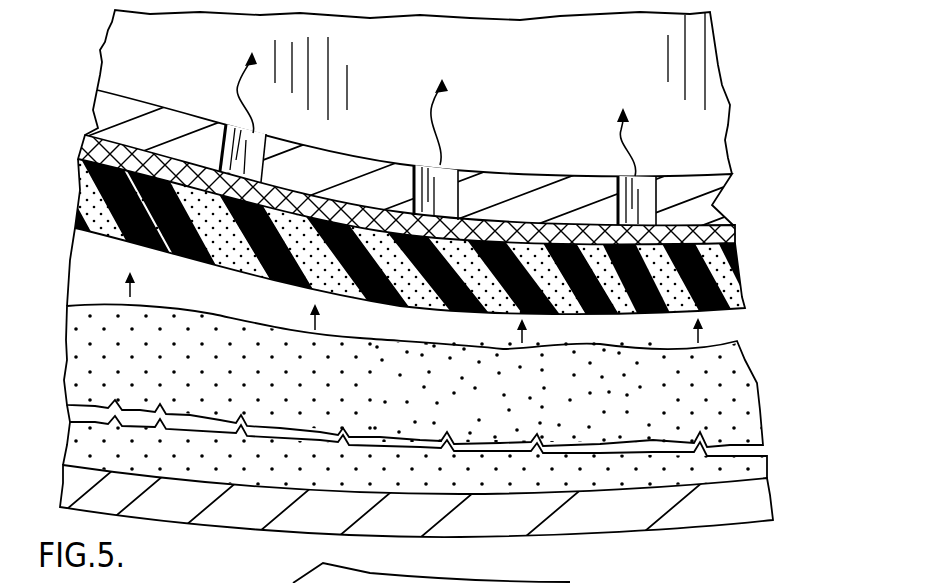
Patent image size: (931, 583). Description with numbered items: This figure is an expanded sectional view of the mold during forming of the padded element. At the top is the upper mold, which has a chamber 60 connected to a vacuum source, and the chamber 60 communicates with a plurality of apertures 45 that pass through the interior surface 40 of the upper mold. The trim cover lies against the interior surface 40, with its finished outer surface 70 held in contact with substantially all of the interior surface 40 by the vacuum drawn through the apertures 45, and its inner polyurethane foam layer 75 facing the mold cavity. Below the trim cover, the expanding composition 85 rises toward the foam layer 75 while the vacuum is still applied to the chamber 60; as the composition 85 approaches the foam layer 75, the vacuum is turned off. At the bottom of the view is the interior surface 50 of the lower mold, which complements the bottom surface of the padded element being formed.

The chamber 60 is at (590, 74).
The interior surface 40 is at (510, 183).
The apertures 45 is at (645, 188).
The finished outer surface 70 is at (735, 219).
The polyurethane foam layer 75 is at (740, 297).
The composition 85 is at (736, 381).
The interior surface 50 is at (760, 507).